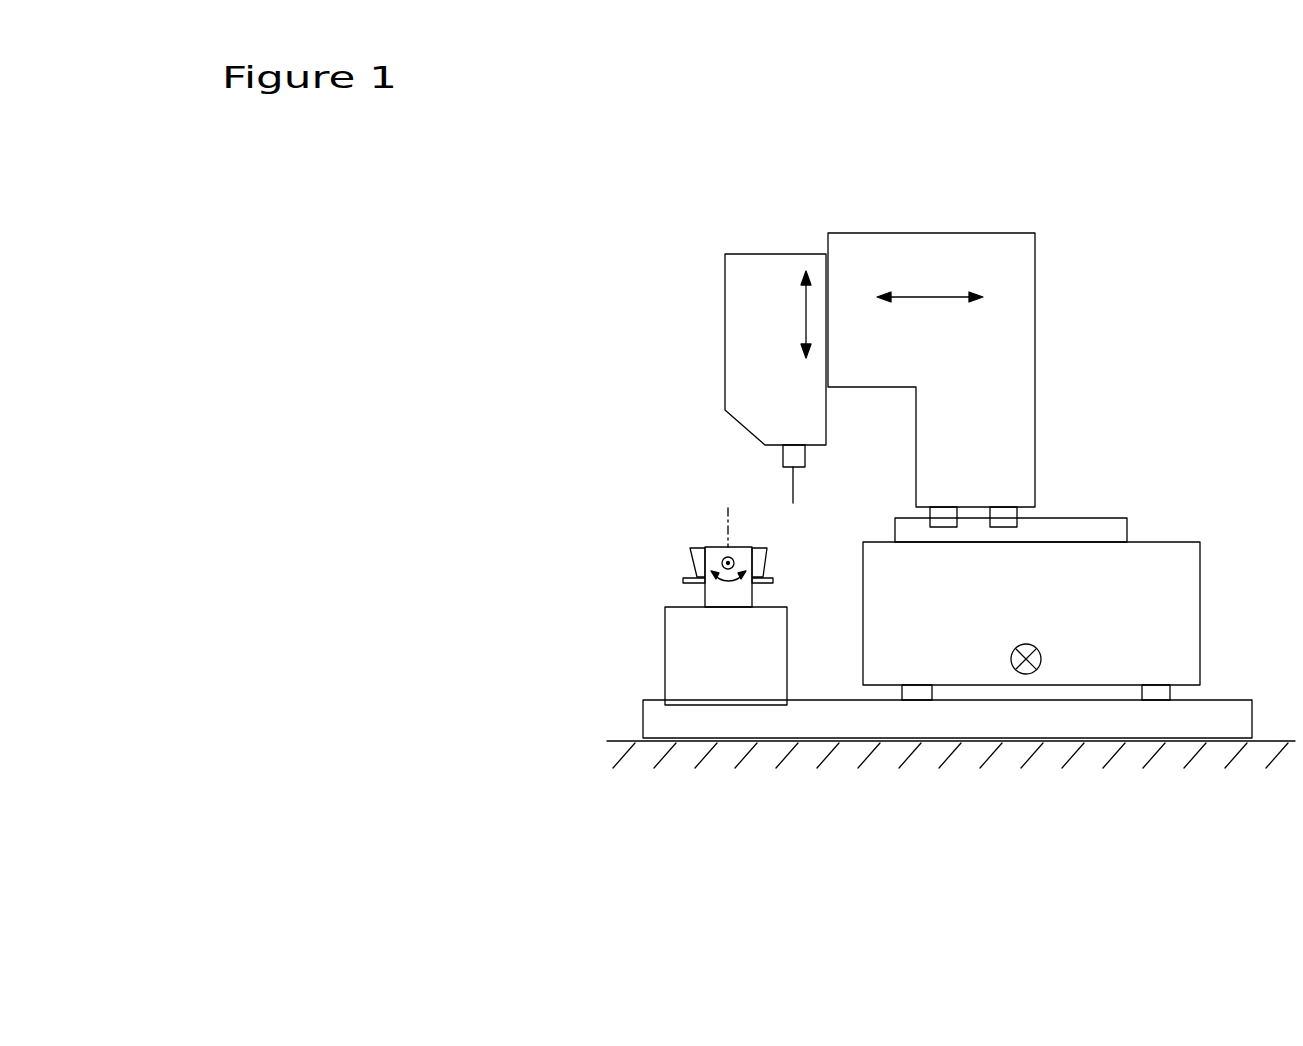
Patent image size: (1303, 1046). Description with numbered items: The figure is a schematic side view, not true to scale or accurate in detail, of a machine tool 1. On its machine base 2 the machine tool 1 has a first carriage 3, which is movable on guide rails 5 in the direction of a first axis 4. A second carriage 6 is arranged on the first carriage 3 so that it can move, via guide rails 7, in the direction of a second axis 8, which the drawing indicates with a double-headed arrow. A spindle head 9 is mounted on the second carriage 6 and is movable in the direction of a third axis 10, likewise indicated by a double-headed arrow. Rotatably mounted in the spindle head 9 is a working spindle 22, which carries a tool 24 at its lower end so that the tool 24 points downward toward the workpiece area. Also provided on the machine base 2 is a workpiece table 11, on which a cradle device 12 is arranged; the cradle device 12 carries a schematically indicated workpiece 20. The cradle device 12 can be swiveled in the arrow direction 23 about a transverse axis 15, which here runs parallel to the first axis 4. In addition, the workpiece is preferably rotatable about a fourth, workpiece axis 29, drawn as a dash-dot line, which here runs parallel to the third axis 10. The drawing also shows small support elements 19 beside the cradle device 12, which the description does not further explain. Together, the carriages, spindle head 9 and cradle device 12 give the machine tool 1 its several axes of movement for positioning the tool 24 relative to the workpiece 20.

The machine tool 1 is at (1063, 210).
The machine base 2 is at (893, 717).
The first carriage 3 is at (1113, 660).
The first axis 4 is at (1010, 668).
The guide rails 5 is at (1155, 690).
The second carriage 6 is at (995, 367).
The guide rails 7 is at (1057, 528).
The second axis 8 is at (925, 297).
The spindle head 9 is at (750, 277).
The third axis 10 is at (806, 307).
The workpiece table 11 is at (727, 680).
The cradle device 12 is at (716, 547).
The transverse axis 15 is at (767, 567).
The clamping pins 19 is at (690, 580).
The workpiece 20 is at (700, 565).
The working spindle 22 is at (788, 456).
The arrow direction 23 is at (729, 582).
The tool 24 is at (790, 495).
The workpiece axis 29 is at (727, 513).